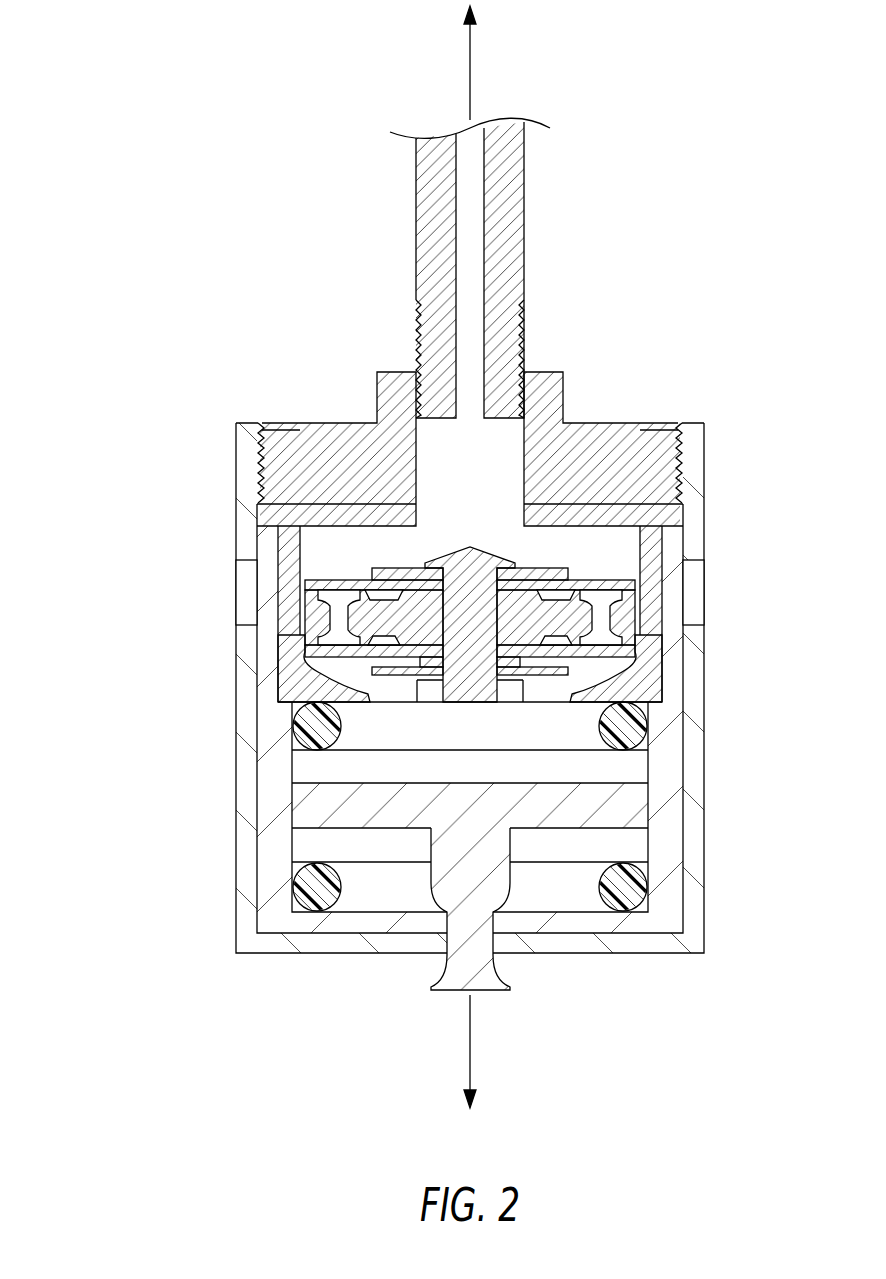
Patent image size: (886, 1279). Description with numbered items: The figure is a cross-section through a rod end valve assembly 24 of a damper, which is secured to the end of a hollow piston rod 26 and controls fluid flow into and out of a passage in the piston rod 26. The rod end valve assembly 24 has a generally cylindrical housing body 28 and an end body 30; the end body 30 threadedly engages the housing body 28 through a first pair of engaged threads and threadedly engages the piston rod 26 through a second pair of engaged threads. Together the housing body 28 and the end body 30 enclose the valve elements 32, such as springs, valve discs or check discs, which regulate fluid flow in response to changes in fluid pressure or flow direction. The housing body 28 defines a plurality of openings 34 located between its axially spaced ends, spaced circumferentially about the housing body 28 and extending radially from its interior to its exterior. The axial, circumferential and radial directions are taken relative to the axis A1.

The rod end valve assembly 24 is at (429, 557).
The piston rod 26 is at (437, 230).
The housing body 28 is at (690, 731).
The end body 30 is at (600, 452).
The valve elements 32 is at (400, 730).
The openings 34 is at (226, 590).
The axis A1 is at (474, 60).